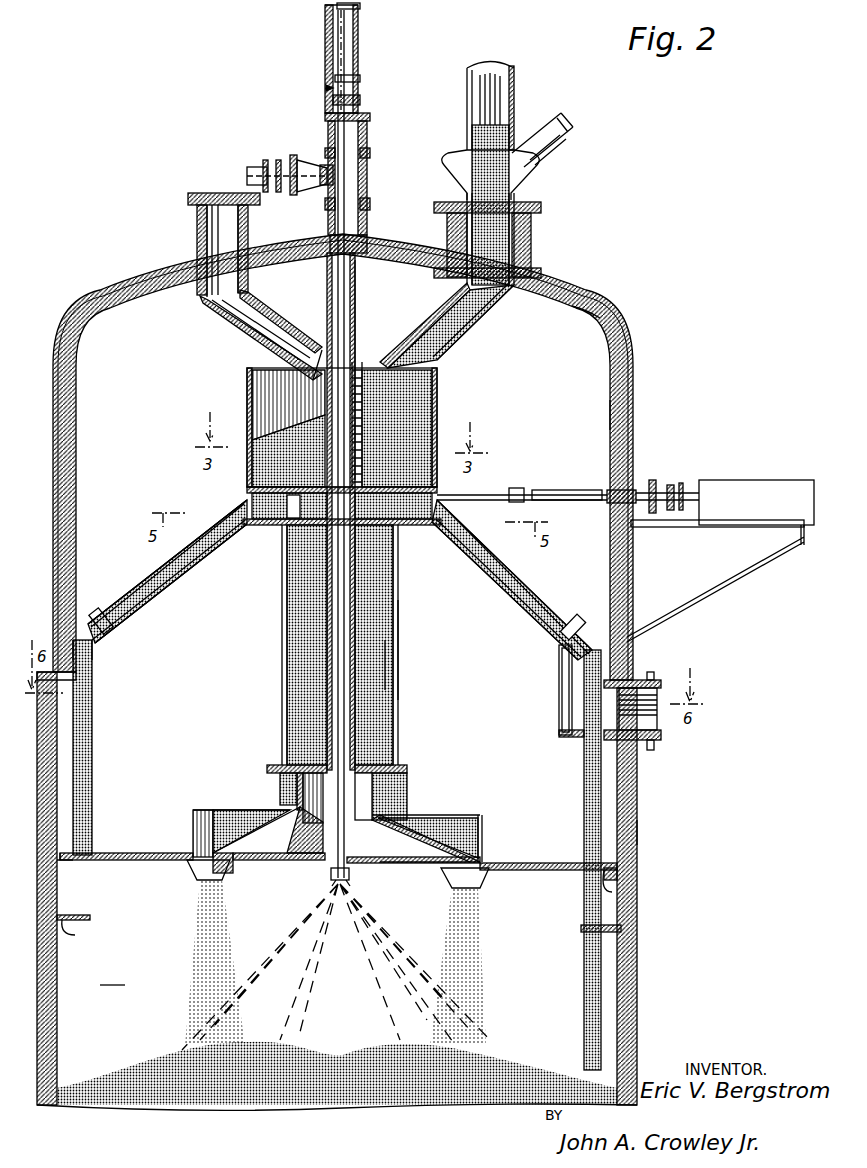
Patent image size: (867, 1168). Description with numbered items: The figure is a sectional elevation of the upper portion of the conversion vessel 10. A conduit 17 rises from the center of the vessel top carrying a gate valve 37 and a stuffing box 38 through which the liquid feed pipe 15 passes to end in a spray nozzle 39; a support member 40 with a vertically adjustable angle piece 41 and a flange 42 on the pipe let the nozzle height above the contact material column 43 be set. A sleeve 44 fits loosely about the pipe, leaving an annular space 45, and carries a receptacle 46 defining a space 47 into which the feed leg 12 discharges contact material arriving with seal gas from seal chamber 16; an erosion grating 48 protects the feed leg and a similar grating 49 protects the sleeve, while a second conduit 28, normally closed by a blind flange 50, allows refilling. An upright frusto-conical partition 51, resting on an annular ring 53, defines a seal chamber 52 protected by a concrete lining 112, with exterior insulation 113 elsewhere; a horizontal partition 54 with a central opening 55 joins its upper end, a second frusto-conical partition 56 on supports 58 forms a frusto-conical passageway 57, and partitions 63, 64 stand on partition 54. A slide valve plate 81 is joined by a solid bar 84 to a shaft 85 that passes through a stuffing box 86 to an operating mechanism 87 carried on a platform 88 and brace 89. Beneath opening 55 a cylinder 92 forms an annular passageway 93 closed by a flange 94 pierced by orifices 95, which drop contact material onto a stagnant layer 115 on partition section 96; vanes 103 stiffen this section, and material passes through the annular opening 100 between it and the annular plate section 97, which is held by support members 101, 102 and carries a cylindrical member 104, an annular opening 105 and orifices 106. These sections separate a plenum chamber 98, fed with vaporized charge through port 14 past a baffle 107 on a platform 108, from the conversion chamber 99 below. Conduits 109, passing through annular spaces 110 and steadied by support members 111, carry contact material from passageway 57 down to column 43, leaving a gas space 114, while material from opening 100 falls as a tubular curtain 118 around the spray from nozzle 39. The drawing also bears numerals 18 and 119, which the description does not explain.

The conversion vessel 10 is at (634, 388).
The feed leg 12 is at (514, 80).
The vaporized hydrocarbon charge port 14 is at (655, 672).
The liquid feed pipe 15 is at (346, 90).
The seal chamber 16 is at (455, 155).
The conduit 17 is at (367, 137).
The inlet pipe 18 is at (572, 138).
The second conduit 28 is at (197, 230).
The gate valve 37 is at (290, 160).
The stuffing box 38 is at (360, 103).
The spray nozzle 39 is at (352, 880).
The support member 40 is at (327, 40).
The vertically adjustable angle piece 41 is at (326, 88).
The flange 42 is at (360, 77).
The contact material column 43 is at (355, 1108).
The sleeve 44 is at (327, 290).
The annular space 45 is at (356, 302).
The receptacle 46 is at (437, 405).
The space 47 is at (250, 398).
The erosion grating 48 is at (480, 330).
The erosion grating 49 is at (364, 362).
The blind flange 50 is at (220, 195).
The frusto-conical partition 51 is at (142, 610).
The seal chamber 52 is at (575, 344).
The annular ring 53 is at (92, 680).
The horizontal circular partition 54 is at (445, 532).
The opening 55 is at (305, 525).
The second frusto-conical partition 56 is at (148, 580).
The frusto-conical passageway 57 is at (150, 580).
The supports 58 is at (100, 608).
The partition 63 is at (290, 518).
The partition 64 is at (398, 560).
The slide valve plate 81 is at (522, 487).
The solid bar 84 is at (512, 488).
The shaft 85 is at (578, 490).
The stuffing box 86 is at (658, 480).
The operating mechanism 87 is at (760, 480).
The platform 88 is at (705, 528).
The brace 89 is at (715, 600).
The cylinder 92 is at (398, 640).
The annular passageway 93 is at (385, 668).
The flange 94 is at (372, 800).
The orifices 95 is at (285, 780).
The partition section 96 is at (300, 850).
The partition section 97 is at (100, 860).
The plenum chamber 98 is at (568, 795).
The conversion chamber 99 is at (112, 976).
The annular opening 100 is at (255, 875).
The annular support member 101 is at (615, 890).
The support members 102 is at (200, 880).
The support members 103 is at (430, 838).
The upright cylindrical member 104 is at (485, 815).
The annular opening 105 is at (490, 862).
The orifices 106 is at (160, 852).
The baffle 107 is at (559, 665).
The platform 108 is at (570, 740).
The conduits 109 is at (92, 720).
The annular spaces 110 is at (100, 855).
The support members 111 is at (80, 930).
The concrete lining 112 is at (617, 418).
The exterior insulation 113 is at (637, 835).
The gas space 114 is at (568, 953).
The stagnant layer of contact material 115 is at (420, 863).
The tubular curtain 118 is at (465, 940).
The spray 119 is at (325, 880).